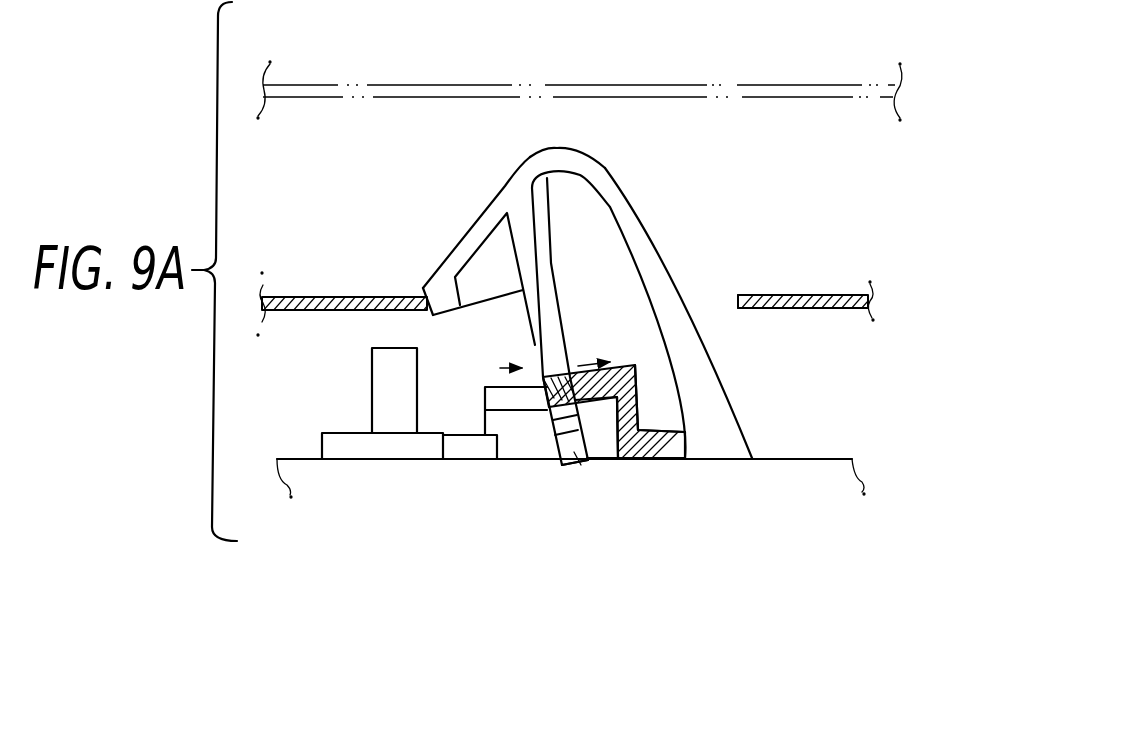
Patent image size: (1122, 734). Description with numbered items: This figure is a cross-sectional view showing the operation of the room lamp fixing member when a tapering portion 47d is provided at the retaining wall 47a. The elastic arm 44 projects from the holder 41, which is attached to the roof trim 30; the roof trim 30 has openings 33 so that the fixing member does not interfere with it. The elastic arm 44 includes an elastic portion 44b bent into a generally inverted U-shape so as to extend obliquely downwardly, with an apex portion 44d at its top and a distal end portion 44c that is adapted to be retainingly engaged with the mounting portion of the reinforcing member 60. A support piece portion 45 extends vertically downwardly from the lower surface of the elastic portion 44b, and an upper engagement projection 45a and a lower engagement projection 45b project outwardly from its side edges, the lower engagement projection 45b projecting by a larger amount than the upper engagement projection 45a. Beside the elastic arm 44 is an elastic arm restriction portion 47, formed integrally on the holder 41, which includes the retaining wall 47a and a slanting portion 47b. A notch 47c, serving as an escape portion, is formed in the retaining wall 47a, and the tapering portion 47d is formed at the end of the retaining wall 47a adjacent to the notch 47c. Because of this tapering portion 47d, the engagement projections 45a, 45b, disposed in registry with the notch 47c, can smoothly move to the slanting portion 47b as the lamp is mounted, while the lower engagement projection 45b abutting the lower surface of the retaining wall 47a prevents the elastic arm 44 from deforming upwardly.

The roof trim 30 is at (800, 297).
The openings 33 is at (727, 303).
The holder 41 is at (805, 457).
The elastic arm 44 is at (510, 118).
The elastic portion 44b is at (457, 236).
The distal end portion 44c is at (437, 314).
The apex portion 44d is at (558, 147).
The support piece portion 45 is at (540, 330).
The upper engagement projection 45a is at (556, 380).
The lower engagement projection 45b is at (578, 454).
The elastic arm restriction portion 47 is at (606, 326).
The retaining wall 47a is at (495, 386).
The slanting portion 47b is at (614, 364).
The notch 47c is at (514, 402).
The tapering portion 47d is at (537, 400).
The reinforcing member 60 is at (752, 93).